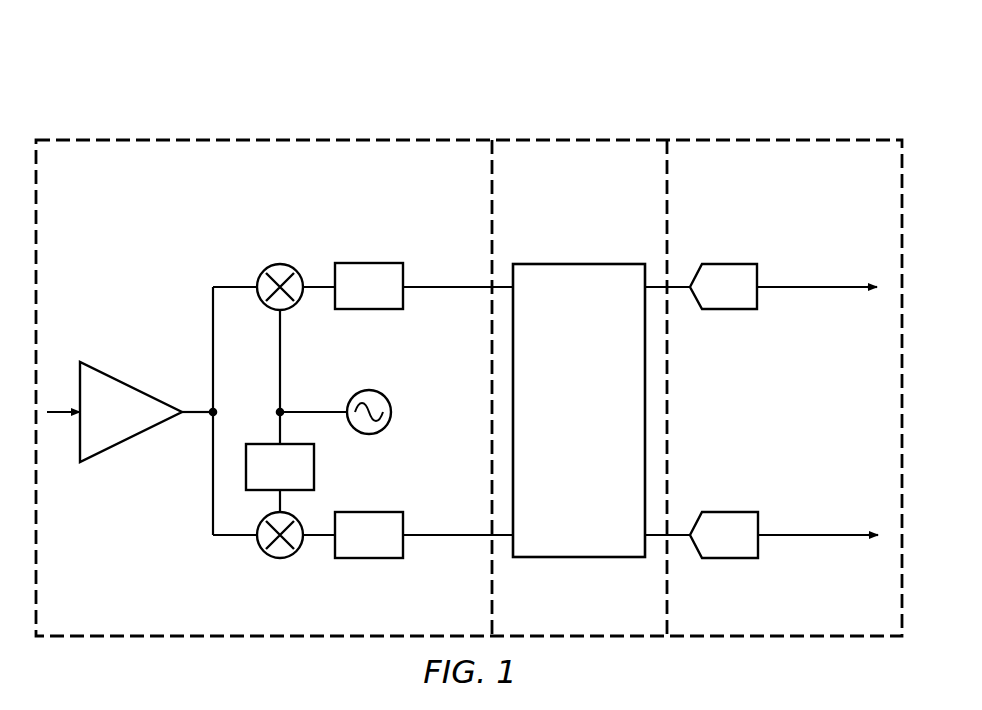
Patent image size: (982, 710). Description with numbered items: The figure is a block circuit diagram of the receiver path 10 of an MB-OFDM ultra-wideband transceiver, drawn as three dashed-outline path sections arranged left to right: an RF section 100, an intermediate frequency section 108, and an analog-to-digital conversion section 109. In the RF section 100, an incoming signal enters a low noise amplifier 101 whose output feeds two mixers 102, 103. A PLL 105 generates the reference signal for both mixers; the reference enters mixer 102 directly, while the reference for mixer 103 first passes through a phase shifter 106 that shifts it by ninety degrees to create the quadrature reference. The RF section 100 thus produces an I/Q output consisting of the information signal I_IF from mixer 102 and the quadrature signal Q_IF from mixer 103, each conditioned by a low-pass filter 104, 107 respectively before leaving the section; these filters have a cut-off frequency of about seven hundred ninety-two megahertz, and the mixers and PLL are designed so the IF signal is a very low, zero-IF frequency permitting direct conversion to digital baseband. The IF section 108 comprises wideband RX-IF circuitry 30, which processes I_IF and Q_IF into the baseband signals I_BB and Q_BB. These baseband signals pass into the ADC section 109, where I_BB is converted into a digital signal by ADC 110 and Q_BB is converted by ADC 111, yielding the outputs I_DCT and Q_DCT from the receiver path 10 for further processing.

The receiver path 10 is at (250, 68).
The RF section 100 is at (207, 138).
The low noise amplifier 101 is at (130, 382).
The mixer 102 is at (280, 264).
The mixer 103 is at (275, 558).
The low-pass filter 104 is at (367, 263).
The PLL 105 is at (391, 412).
The phase shifter 106 is at (314, 465).
The low-pass filter 107 is at (367, 558).
The intermediate frequency (IF) section 108 is at (602, 138).
The analog-to-digital conversion (ADC) section 109 is at (812, 136).
The ADC 110 is at (740, 263).
The ADC 111 is at (733, 558).
The wideband RX-IF circuitry 30 is at (566, 471).